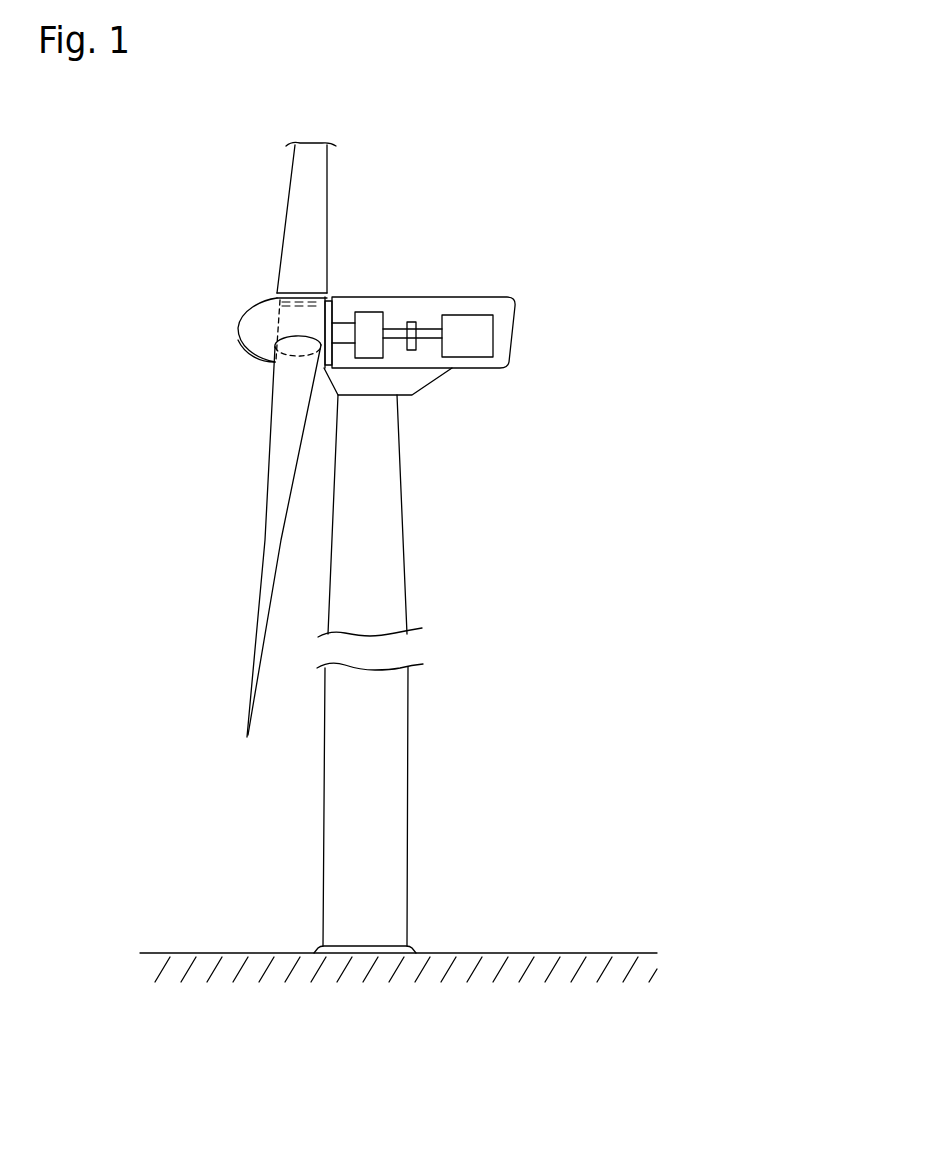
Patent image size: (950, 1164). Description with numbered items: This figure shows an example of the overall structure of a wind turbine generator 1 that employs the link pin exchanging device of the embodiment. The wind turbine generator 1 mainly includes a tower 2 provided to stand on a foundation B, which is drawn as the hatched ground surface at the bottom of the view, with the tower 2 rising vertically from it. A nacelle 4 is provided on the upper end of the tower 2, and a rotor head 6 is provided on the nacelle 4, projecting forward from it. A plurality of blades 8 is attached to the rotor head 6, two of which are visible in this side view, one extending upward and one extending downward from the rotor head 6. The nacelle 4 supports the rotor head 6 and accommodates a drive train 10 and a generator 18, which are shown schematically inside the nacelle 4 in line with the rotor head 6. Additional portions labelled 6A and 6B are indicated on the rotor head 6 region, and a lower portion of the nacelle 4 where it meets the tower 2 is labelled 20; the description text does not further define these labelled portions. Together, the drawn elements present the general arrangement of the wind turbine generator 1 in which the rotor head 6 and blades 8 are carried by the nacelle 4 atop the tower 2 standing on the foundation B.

The wind turbine generator 1 is at (522, 219).
The tower 2 is at (408, 768).
The nacelle 4 is at (516, 330).
The rotor head 6 is at (219, 330).
The hub 6A is at (290, 322).
The hub cover 6B is at (247, 352).
The blades 8 is at (288, 202).
The drive train 10 is at (397, 319).
The generator 18 is at (468, 330).
The nacelle base 20 is at (417, 378).
The foundation B is at (317, 950).